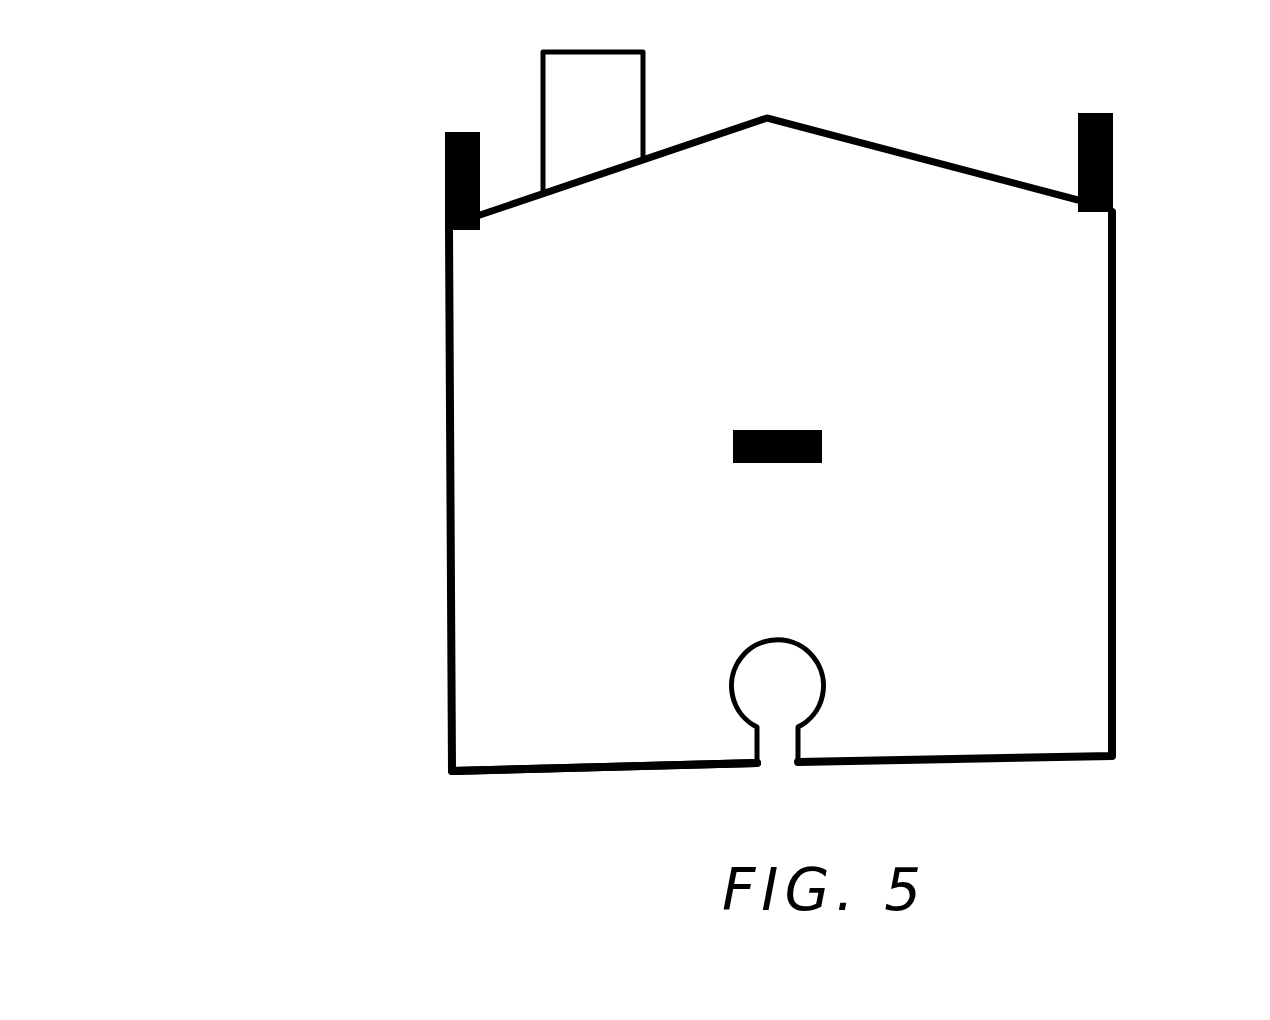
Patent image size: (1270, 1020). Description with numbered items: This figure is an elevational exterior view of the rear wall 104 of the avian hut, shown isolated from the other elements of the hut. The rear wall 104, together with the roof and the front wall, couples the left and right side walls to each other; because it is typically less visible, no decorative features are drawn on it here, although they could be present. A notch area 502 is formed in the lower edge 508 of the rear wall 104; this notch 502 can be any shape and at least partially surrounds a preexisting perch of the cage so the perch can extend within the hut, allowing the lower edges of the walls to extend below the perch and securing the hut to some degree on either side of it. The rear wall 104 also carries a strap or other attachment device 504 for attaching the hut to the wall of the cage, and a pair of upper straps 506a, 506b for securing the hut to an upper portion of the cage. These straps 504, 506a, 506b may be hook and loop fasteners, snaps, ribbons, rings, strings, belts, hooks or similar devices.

The rear wall 104 is at (377, 555).
The notch area 502 is at (789, 768).
The attachment device 504 is at (822, 450).
The upper strap 506a is at (445, 202).
The upper strap 506b is at (1113, 168).
The lower edge 508 is at (532, 772).